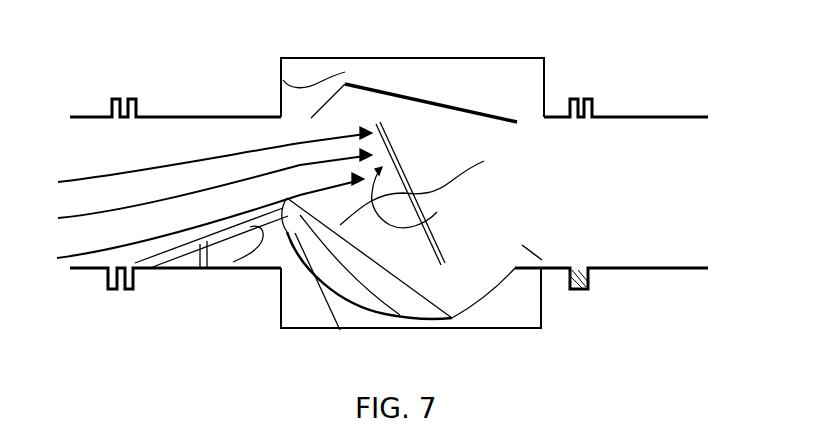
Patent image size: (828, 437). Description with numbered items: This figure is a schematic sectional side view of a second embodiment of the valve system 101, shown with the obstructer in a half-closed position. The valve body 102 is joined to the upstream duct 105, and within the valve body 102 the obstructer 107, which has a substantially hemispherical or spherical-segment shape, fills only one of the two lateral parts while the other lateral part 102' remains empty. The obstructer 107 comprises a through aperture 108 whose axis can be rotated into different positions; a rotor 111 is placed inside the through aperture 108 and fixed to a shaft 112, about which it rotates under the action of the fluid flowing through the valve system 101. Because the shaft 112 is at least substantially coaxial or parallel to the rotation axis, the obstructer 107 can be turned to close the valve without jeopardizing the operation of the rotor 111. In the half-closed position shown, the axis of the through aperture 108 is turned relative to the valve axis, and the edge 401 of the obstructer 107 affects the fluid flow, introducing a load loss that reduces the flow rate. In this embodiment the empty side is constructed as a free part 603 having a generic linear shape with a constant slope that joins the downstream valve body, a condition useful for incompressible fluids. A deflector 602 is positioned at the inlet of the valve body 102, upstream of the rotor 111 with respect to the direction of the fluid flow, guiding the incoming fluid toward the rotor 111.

The valve system 101 is at (558, 73).
The valve body 102 is at (242, 298).
The lateral part of the valve body 102' is at (279, 88).
The upstream duct 105 is at (113, 285).
The obstructer 107 is at (383, 285).
The through aperture 108 is at (522, 244).
The rotor 111 is at (387, 135).
The shaft 112 is at (437, 205).
The edge of the obstructer 401 is at (340, 330).
The deflector 602 is at (223, 269).
The free part 603 is at (420, 98).